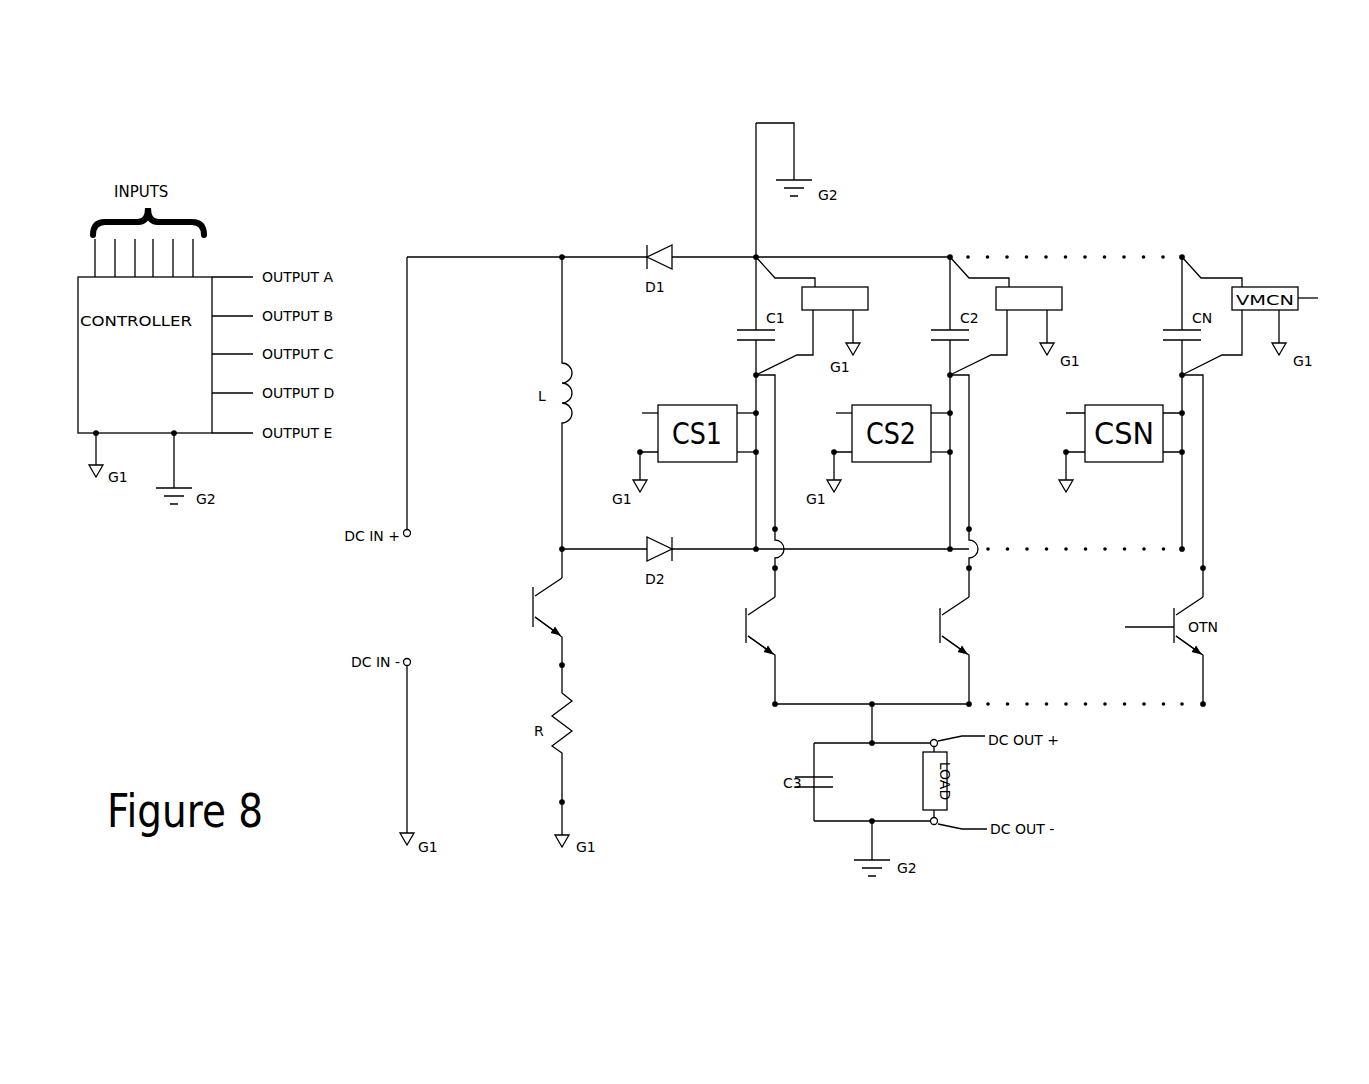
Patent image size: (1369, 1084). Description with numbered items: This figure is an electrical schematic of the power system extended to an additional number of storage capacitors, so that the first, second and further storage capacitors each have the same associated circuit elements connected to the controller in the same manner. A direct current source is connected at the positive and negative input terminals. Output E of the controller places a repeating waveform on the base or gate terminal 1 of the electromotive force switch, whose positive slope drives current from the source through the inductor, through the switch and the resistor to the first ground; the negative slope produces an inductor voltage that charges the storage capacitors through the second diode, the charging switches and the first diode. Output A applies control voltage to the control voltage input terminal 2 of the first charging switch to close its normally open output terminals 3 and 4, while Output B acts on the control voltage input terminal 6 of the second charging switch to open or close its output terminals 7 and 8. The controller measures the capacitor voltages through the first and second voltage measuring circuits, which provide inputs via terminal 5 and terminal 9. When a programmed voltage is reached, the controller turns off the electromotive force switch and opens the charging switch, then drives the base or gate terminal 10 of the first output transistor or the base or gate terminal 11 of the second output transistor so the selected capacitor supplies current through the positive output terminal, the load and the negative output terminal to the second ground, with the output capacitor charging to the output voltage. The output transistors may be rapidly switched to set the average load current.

The base or gate terminal 1 is at (533, 607).
The control voltage input terminal 2 is at (642, 413).
The output terminal 3 is at (747, 409).
The output terminal 4 is at (749, 457).
The terminal of voltage measuring circuit VMC1 5 is at (868, 298).
The control voltage input terminal 6 is at (836, 413).
The output terminal 7 is at (944, 410).
The output terminal 8 is at (944, 457).
The terminal of voltage measuring circuit VMC2 9 is at (1062, 298).
The base or gate terminal 10 is at (746, 627).
The base or gate terminal 11 is at (940, 627).